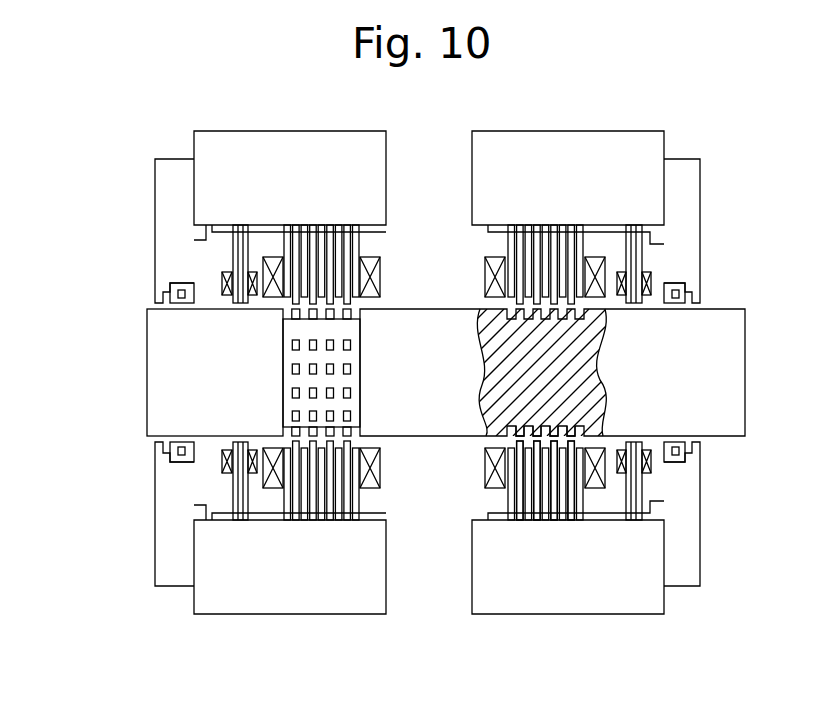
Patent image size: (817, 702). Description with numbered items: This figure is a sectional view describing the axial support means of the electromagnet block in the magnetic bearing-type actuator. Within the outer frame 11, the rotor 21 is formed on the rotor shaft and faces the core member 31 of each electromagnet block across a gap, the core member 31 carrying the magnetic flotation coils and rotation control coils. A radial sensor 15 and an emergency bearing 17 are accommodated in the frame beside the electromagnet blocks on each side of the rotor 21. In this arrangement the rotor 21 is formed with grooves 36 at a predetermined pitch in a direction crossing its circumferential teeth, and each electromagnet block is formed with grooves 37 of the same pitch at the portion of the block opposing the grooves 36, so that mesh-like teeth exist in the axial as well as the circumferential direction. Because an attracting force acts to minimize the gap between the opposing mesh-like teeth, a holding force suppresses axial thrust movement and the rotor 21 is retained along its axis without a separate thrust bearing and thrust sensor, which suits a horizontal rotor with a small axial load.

The outer frame 11 is at (687, 510).
The radial sensor 15 is at (222, 273).
The emergency bearing 17 is at (170, 288).
The rotor 21 is at (453, 353).
The core member 31 is at (553, 248).
The grooves 36 is at (303, 375).
The grooves 37 is at (573, 443).